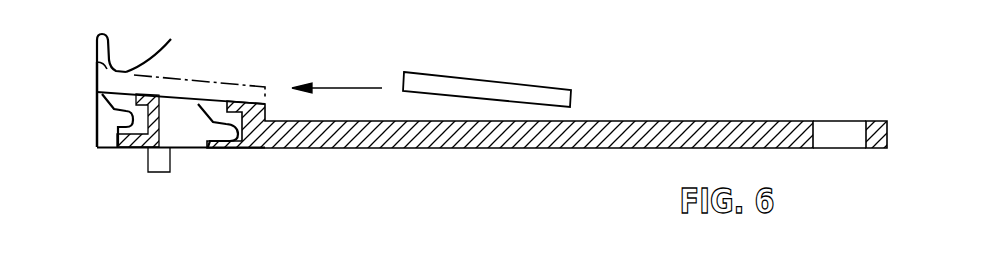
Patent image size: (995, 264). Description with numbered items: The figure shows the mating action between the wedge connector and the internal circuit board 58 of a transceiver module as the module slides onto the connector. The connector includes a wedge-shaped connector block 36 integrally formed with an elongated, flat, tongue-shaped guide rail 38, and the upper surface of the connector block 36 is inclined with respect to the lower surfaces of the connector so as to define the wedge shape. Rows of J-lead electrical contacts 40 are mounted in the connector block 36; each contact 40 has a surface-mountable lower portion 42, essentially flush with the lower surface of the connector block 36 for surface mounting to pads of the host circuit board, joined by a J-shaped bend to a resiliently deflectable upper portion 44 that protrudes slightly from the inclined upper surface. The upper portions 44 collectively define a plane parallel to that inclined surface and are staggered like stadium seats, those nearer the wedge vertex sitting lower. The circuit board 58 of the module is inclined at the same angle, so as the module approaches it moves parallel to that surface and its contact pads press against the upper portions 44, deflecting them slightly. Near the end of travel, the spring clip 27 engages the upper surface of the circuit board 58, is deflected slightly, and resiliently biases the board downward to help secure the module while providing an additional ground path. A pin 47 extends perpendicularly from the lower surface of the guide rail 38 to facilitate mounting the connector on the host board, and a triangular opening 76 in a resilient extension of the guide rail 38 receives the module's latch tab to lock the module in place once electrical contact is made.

The spring clip 27 is at (96, 50).
The connector block 36 is at (99, 120).
The guide rail 38 is at (684, 121).
The electrical contacts 40 is at (205, 98).
The lower portion 42 is at (108, 149).
The upper portion 44 is at (120, 97).
The pin 47 is at (155, 173).
The internal circuit board 58 is at (492, 86).
The triangular opening 76 is at (841, 121).